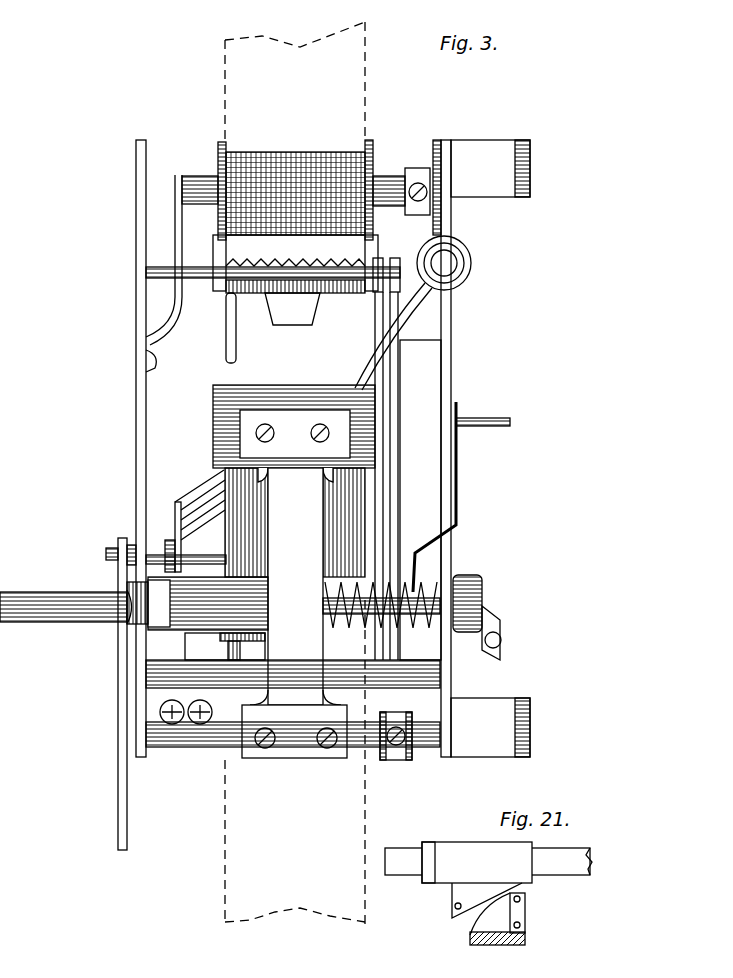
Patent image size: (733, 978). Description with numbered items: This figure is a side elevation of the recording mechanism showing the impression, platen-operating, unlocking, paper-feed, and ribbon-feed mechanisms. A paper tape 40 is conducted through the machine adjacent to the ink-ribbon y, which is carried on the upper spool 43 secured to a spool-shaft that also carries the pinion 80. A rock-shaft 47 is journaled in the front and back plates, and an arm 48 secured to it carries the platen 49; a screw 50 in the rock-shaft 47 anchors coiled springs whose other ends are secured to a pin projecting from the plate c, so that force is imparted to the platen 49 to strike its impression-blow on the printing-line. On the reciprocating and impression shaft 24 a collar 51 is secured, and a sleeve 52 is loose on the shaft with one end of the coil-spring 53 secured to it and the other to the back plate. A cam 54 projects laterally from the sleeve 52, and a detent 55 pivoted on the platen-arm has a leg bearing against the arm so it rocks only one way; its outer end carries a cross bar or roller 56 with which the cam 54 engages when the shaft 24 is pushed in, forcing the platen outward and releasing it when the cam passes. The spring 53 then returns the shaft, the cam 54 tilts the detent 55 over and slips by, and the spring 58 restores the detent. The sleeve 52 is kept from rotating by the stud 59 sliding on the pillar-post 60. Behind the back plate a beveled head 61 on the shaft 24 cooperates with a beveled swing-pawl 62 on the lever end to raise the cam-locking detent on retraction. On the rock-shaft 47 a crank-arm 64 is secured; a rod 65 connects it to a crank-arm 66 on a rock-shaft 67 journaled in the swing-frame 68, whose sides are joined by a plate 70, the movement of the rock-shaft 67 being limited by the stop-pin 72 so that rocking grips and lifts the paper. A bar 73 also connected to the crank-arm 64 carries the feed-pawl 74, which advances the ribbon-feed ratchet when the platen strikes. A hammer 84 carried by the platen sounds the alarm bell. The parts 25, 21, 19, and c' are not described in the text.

In FIG. 3, the paper tape 40 is at (295, 473).
In FIG. 3, the plate c is at (132, 448).
In FIG. 3, the plate 25 is at (137, 694).
In FIG. 3, the bracket 21 is at (112, 553).
In FIG. 3, the reciprocating and impression shaft 24 is at (66, 597).
In FIG. 21, the reciprocating and impression shaft 24 is at (502, 861).
In FIG. 3, the ribbon spool 43 is at (306, 182).
In FIG. 3, the swing-frame 68 is at (303, 259).
In FIG. 3, the stop-pin 72 is at (295, 255).
In FIG. 3, the plate 70 is at (273, 256).
In FIG. 3, the rock-shaft 67 is at (295, 281).
In FIG. 3, the crank-arm 66 is at (381, 459).
In FIG. 3, the pinion 80 is at (437, 175).
In FIG. 3, the rail c' is at (485, 448).
In FIG. 3, the hammer 84 is at (428, 313).
In FIG. 3, the rod 65 is at (420, 500).
In FIG. 3, the bar 73 is at (450, 497).
In FIG. 3, the feed-pawl 74 is at (483, 435).
In FIG. 3, the platen 49 is at (294, 426).
In FIG. 3, the arm 48 is at (295, 613).
In FIG. 3, the arm 19 is at (186, 521).
In FIG. 3, the sleeve 52 is at (208, 603).
In FIG. 21, the sleeve 52 is at (477, 862).
In FIG. 3, the coil-spring 53 is at (381, 595).
In FIG. 3, the beveled collar or head 61 is at (477, 592).
In FIG. 3, the beveled swing-pawl 62 is at (505, 633).
In FIG. 3, the collar 51 is at (162, 636).
In FIG. 21, the collar 51 is at (432, 848).
In FIG. 3, the cam 54 is at (225, 648).
In FIG. 21, the cam 54 is at (487, 900).
In FIG. 3, the stud 59 is at (247, 652).
In FIG. 3, the pillar-post 60 is at (293, 674).
In FIG. 3, the rock-shaft 47 is at (293, 750).
In FIG. 3, the screw 50 is at (176, 725).
In FIG. 3, the crank-arm 64 is at (396, 748).
In FIG. 3, the ink-ribbon y is at (373, 501).
In FIG. 21, the cross bar or roller 56 is at (570, 885).
In FIG. 21, the detent 55 is at (536, 912).
In FIG. 21, the spring 58 is at (497, 919).